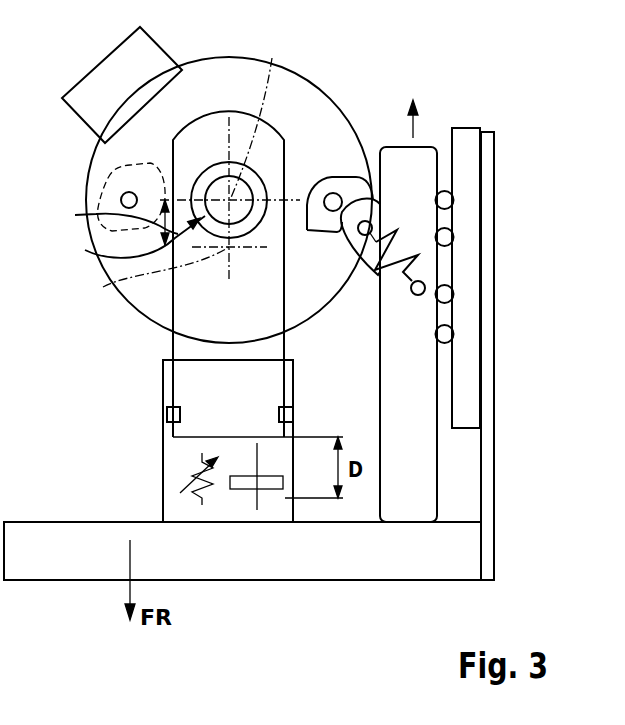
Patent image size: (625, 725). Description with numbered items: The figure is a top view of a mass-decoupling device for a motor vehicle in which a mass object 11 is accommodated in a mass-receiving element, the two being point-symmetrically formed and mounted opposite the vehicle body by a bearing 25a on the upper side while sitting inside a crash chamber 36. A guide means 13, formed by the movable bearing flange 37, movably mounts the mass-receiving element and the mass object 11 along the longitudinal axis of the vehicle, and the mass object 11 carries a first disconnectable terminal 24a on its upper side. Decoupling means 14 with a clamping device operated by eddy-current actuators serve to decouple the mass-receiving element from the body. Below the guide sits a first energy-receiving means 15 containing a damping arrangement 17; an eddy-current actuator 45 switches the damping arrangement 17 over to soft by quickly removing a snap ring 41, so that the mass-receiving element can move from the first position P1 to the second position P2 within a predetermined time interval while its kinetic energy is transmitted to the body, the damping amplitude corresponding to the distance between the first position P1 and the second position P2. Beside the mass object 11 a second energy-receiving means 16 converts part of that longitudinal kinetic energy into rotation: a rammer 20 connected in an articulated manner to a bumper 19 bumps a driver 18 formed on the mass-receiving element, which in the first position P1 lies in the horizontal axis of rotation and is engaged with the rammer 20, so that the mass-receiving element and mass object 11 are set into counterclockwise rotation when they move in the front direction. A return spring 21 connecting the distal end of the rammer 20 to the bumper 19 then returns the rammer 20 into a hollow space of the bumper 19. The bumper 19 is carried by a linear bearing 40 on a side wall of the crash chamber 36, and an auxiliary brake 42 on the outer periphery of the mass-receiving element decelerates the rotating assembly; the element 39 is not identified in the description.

The mass object 11 is at (311, 98).
The guide means 13 is at (173, 342).
The decoupling means 14 is at (114, 222).
The first energy-receiving means 15 is at (116, 481).
The second energy-receiving means 16 is at (474, 105).
The damping arrangement 17 is at (170, 447).
The driver 18 is at (120, 199).
The bumper 19 is at (422, 146).
The rammer 20 is at (360, 266).
The return spring 21 is at (397, 268).
The first disconnectable terminal 24a is at (125, 239).
The bearing 25a is at (218, 165).
The crash chamber 36 is at (494, 203).
The movable bearing flange 37 is at (247, 162).
The pivot 39 is at (325, 178).
The linear bearing 40 is at (445, 190).
The snap ring 41 is at (167, 415).
The auxiliary brake 42 is at (82, 80).
The eddy-current actuator 45 is at (272, 512).
The first position P1 is at (259, 115).
The second position P2 is at (168, 276).